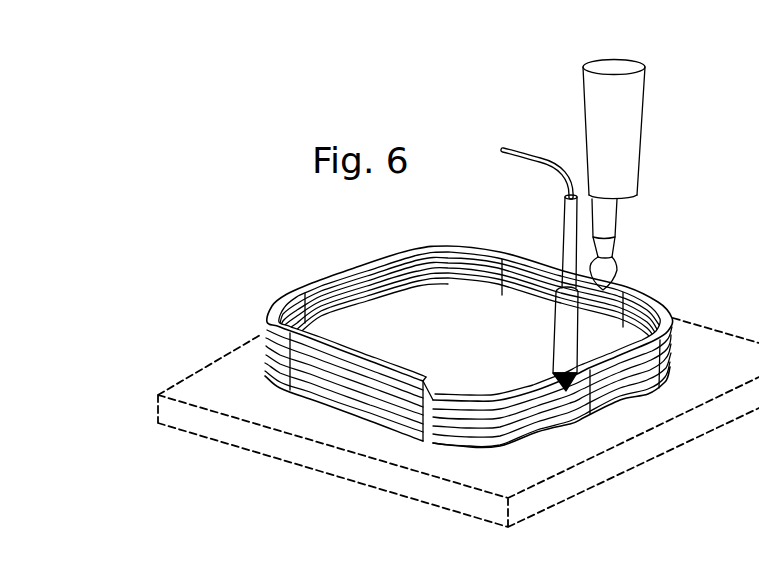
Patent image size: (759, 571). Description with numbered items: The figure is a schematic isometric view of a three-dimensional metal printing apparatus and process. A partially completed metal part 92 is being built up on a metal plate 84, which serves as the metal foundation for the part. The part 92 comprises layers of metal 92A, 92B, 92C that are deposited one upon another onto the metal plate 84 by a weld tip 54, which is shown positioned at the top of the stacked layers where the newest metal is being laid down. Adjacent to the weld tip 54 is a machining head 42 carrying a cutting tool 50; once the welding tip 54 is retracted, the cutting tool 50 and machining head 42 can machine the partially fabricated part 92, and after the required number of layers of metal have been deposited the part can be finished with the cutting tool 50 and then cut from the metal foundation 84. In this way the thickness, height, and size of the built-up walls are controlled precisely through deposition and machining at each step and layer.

The machining head 42 is at (628, 177).
The cutting tool 50 is at (613, 277).
The weld tip 54 is at (553, 375).
The metal plate 84 is at (332, 477).
The partially completed metal part 92 is at (425, 339).
The layer of metal 92A is at (262, 363).
The layer of metal 92B is at (267, 323).
The layer of metal 92C is at (274, 308).